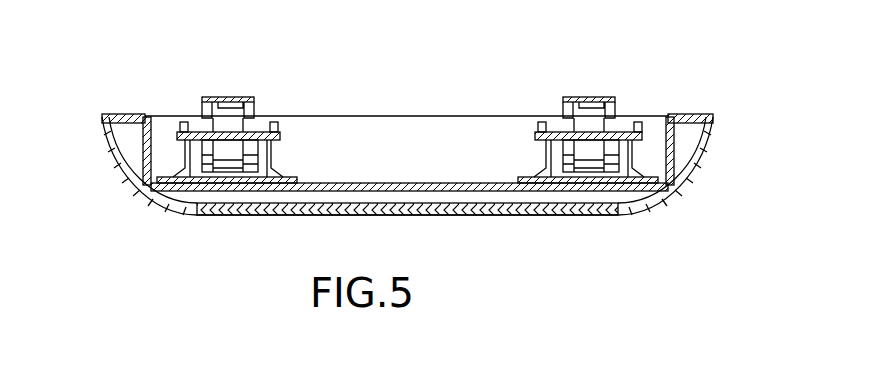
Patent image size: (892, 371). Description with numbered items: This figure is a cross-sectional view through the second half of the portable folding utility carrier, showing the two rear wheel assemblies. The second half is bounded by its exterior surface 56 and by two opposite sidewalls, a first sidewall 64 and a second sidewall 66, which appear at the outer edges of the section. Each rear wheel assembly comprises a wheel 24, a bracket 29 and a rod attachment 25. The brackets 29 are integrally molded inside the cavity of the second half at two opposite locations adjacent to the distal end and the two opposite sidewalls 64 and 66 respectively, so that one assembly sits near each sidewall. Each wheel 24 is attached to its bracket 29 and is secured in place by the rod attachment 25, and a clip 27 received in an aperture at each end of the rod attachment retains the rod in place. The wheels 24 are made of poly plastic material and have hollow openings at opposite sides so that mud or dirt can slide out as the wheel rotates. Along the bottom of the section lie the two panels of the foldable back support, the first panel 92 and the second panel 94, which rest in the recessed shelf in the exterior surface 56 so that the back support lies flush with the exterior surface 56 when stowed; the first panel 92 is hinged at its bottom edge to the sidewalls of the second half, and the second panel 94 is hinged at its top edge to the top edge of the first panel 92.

The wheel 24 is at (229, 96).
The rod attachment 25 is at (259, 121).
The clip 27 is at (181, 123).
The bracket 29 is at (277, 153).
The exterior surface 56 is at (167, 208).
The first sidewall 64 is at (705, 172).
The second sidewall 66 is at (120, 170).
The first panel 92 is at (400, 216).
The second panel 94 is at (435, 202).